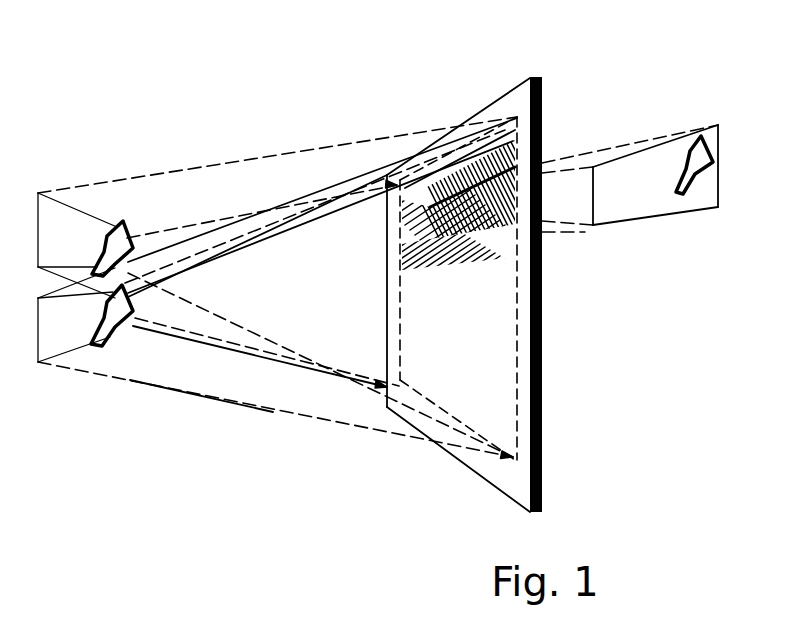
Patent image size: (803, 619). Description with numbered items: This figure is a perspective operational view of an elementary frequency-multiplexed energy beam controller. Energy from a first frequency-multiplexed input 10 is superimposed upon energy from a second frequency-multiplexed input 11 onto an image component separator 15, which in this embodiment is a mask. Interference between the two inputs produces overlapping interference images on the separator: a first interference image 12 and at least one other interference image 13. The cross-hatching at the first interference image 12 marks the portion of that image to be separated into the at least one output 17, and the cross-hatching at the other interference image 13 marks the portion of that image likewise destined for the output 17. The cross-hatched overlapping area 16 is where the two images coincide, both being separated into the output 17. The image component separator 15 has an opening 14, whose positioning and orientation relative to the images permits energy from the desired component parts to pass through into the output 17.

The first frequency-multiplexed input 10 is at (85, 245).
The second frequency-multiplexed input 11 is at (85, 315).
The first interference image 12 is at (526, 150).
The at least one other interference image 13 is at (515, 249).
The opening 14 is at (424, 209).
The image component separator 15 is at (543, 380).
The overlapping area 16 is at (518, 203).
The output 17 is at (630, 178).